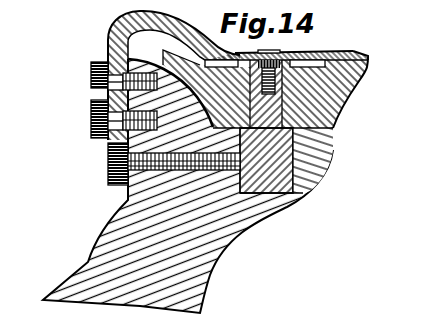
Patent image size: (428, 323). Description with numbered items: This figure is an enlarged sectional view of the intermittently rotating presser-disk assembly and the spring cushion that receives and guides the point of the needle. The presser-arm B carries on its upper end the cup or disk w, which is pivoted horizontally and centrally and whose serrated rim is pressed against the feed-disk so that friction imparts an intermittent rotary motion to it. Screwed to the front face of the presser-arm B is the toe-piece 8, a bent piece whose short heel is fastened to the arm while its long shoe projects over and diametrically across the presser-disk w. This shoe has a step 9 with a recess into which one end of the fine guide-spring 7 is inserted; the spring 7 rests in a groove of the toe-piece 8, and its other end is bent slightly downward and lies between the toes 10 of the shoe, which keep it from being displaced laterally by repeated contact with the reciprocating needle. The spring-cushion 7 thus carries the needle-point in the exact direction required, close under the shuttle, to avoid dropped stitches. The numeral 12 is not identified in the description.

The guide-spring 7 is at (313, 53).
The toe-piece 8 is at (191, 37).
The step 9 is at (278, 56).
The toes 10 is at (366, 46).
The part (cut off) 12 is at (30, 4).
The presser-disk W is at (325, 94).
The presser-arm B is at (188, 186).